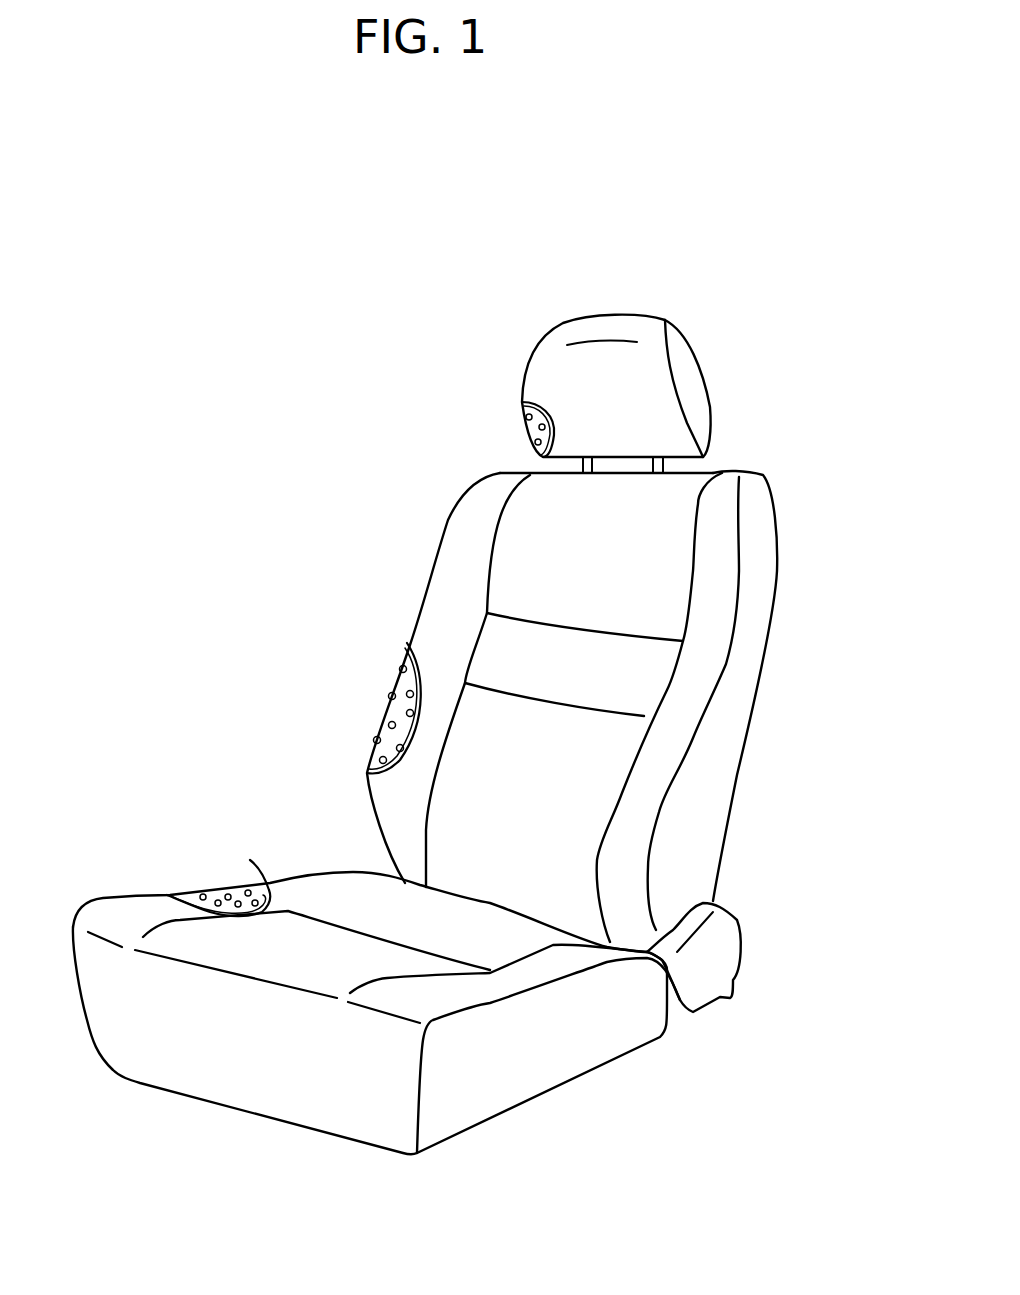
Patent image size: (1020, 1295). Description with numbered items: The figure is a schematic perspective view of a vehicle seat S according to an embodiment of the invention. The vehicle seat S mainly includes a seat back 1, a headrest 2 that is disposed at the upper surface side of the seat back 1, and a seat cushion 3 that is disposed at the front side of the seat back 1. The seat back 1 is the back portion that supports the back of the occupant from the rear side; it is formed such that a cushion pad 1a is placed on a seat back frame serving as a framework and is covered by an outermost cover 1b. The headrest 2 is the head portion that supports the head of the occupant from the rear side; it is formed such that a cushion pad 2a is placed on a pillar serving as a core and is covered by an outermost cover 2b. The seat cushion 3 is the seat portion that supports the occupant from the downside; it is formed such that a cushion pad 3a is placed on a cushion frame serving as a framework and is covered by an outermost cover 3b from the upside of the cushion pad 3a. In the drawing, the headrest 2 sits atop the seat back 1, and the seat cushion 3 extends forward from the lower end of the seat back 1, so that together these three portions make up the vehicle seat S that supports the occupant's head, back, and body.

The vehicle seat S is at (213, 225).
The seat back 1 is at (388, 551).
The cushion pad 1a is at (388, 710).
The outermost cover 1b is at (407, 642).
The headrest 2 is at (505, 324).
The cushion pad 2a is at (523, 427).
The outermost cover 2b is at (522, 402).
The seat cushion 3 is at (263, 808).
The cushion pad 3a is at (215, 897).
The outermost cover 3b is at (250, 860).